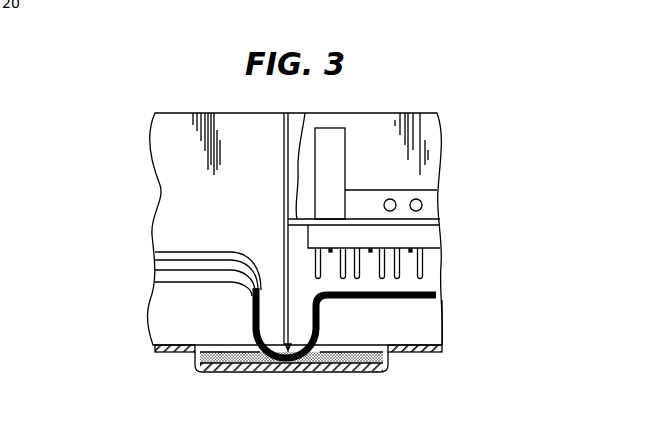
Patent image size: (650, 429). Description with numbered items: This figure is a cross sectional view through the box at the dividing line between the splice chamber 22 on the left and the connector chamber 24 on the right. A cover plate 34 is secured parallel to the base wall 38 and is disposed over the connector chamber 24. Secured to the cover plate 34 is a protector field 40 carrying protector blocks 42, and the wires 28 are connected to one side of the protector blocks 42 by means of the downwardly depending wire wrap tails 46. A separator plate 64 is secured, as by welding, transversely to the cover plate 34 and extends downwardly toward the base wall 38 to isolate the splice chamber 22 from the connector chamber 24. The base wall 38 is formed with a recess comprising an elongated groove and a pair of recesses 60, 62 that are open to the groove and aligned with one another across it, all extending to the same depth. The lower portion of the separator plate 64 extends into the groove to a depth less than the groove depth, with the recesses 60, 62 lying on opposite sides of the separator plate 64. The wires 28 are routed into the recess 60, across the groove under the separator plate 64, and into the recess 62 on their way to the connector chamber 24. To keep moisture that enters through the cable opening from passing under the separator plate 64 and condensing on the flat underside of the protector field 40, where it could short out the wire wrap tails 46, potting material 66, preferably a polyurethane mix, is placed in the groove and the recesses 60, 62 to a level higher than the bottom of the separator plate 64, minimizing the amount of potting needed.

The splice chamber 22 is at (176, 313).
The connector chamber 24 is at (418, 317).
The wires 28 is at (190, 246).
The cover plate 34 is at (305, 113).
The base wall 38 is at (421, 347).
The protector field 40 is at (434, 233).
The protector blocks 42 is at (342, 168).
The wire wrap tails 46 is at (420, 275).
The recess 60 is at (230, 350).
The recess 62 is at (352, 345).
The separator plate 64 is at (284, 243).
The potting material 66 is at (358, 370).